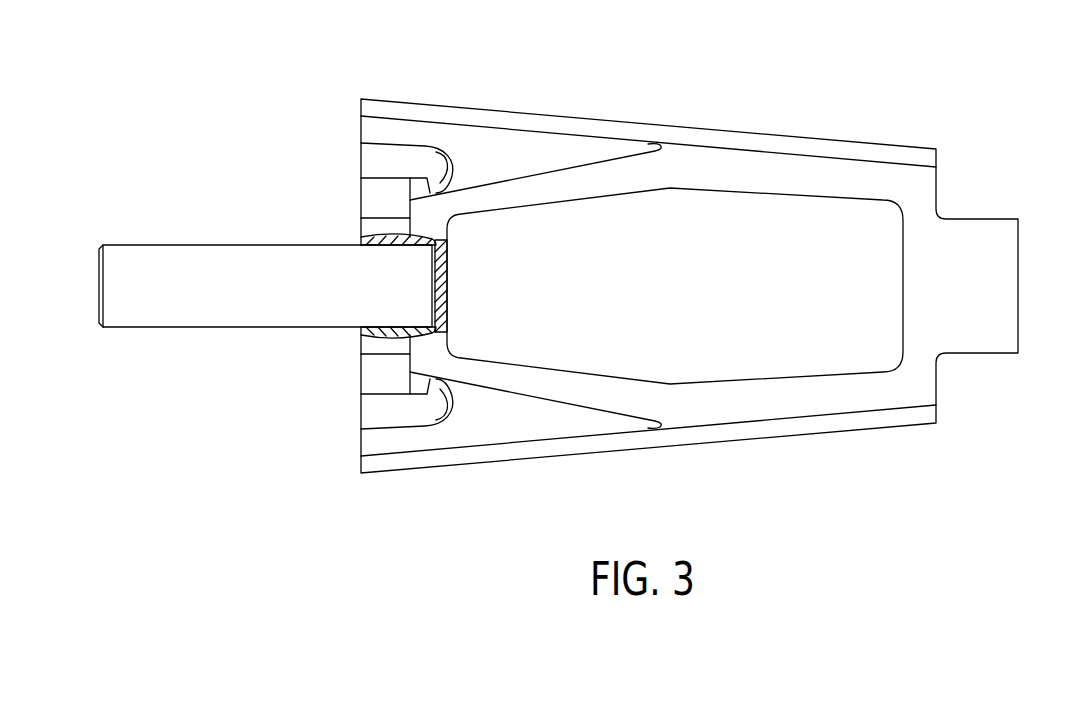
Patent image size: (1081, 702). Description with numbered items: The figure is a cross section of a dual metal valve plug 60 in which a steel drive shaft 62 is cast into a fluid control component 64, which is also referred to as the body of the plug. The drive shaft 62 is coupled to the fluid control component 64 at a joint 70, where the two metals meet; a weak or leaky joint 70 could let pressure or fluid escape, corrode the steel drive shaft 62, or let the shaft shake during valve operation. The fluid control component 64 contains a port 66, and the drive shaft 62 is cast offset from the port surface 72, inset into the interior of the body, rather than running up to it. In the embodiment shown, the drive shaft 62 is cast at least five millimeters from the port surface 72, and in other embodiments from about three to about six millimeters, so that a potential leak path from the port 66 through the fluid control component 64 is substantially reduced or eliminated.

The dual metal valve plug 60 is at (1010, 110).
The drive shaft 62 is at (230, 236).
The fluid control component 64 is at (776, 437).
The port 66 is at (731, 218).
The joint 70 is at (357, 329).
The port surface 72 is at (443, 296).